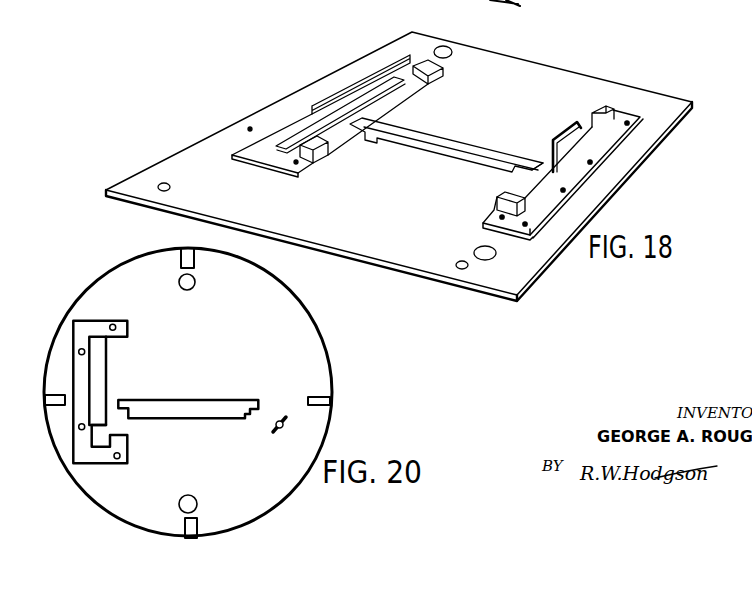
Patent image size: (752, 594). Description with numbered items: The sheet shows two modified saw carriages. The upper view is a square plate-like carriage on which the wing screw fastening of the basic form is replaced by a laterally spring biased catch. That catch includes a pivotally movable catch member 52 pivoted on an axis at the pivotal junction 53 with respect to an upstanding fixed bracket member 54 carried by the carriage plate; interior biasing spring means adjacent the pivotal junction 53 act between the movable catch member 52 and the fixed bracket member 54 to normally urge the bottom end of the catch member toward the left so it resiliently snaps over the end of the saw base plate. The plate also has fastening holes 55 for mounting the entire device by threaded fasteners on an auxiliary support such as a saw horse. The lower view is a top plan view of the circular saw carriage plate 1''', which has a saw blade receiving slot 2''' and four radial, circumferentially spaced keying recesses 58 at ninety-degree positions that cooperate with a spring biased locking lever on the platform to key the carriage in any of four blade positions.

In FIG. 18, the pivotally movable catch member 52 is at (548, 162).
In FIG. 18, the pivotal junction 53 is at (550, 140).
In FIG. 18, the upstanding fixed bracket member 54 is at (570, 147).
In FIG. 18, the fastening holes 55 is at (162, 191).
In FIG. 20, the saw carriage plate 1''' is at (203, 392).
In FIG. 20, the saw blade receiving slot 2''' is at (188, 384).
In FIG. 20, the keying recesses 58 is at (193, 258).